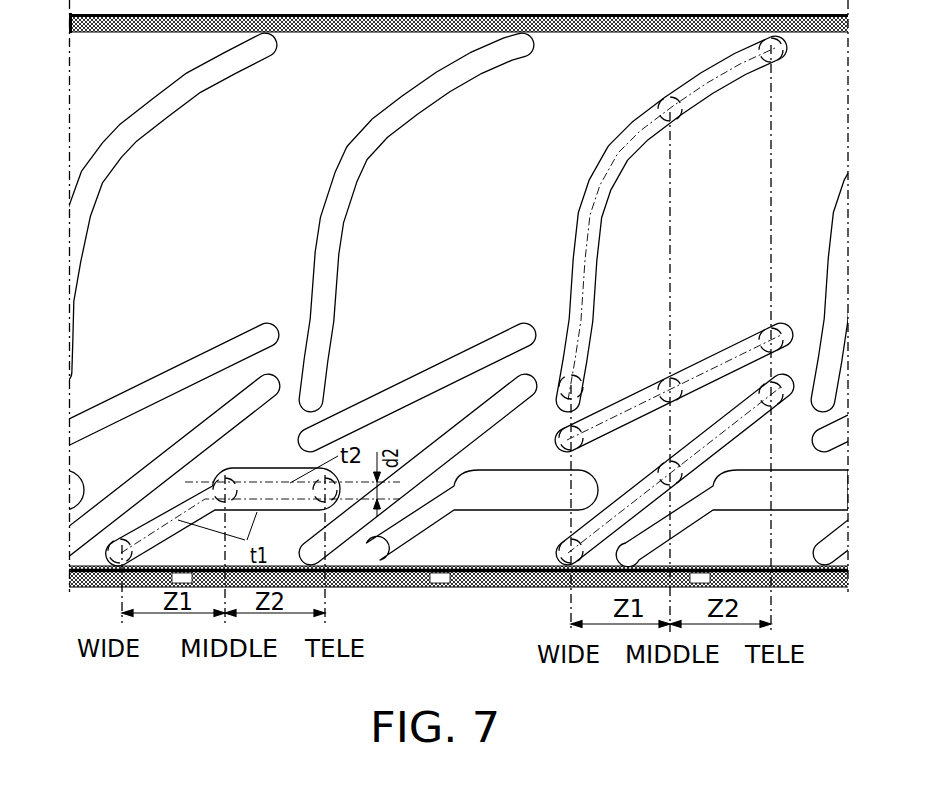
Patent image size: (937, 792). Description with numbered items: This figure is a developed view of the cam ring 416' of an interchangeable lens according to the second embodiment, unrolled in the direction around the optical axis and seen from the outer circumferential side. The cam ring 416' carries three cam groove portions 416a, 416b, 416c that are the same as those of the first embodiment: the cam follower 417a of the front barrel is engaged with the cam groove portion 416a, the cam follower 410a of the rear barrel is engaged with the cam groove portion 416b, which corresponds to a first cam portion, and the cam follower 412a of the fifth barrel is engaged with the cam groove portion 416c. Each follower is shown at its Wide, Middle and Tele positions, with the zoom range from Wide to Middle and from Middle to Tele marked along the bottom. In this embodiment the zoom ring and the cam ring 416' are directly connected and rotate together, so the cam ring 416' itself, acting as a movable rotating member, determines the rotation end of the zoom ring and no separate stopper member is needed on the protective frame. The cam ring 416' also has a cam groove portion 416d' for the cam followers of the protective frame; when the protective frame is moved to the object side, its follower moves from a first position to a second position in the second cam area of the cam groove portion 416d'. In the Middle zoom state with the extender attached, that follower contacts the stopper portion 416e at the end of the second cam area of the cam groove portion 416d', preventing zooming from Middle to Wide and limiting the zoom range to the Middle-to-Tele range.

The cam ring 416' is at (136, 208).
The cam groove portion 416a is at (598, 195).
The cam groove portion 416b is at (707, 362).
The cam groove portion 416c is at (750, 398).
The cam groove portion 416d' is at (253, 488).
The stopper portion 416e is at (213, 484).
The cam follower 417a is at (663, 105).
The cam follower 410a is at (660, 383).
The cam follower 412a is at (660, 480).